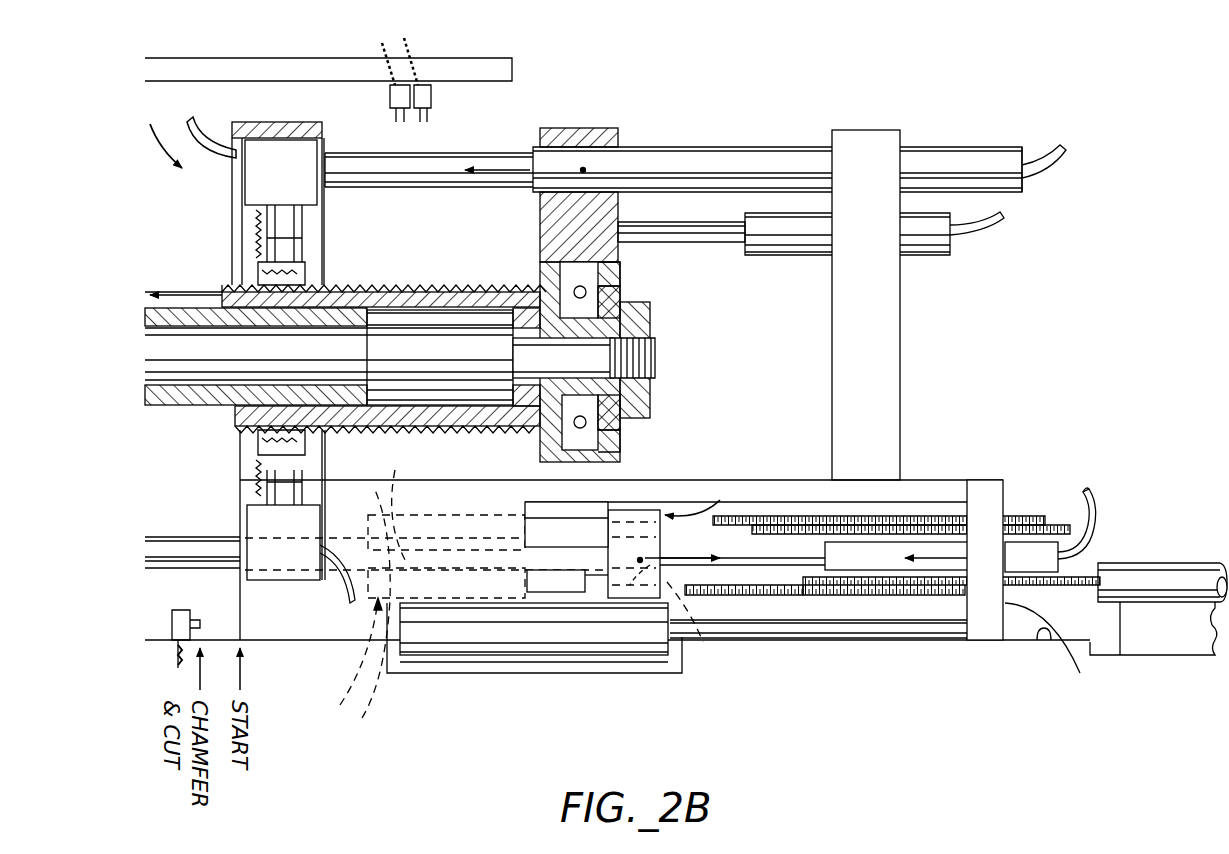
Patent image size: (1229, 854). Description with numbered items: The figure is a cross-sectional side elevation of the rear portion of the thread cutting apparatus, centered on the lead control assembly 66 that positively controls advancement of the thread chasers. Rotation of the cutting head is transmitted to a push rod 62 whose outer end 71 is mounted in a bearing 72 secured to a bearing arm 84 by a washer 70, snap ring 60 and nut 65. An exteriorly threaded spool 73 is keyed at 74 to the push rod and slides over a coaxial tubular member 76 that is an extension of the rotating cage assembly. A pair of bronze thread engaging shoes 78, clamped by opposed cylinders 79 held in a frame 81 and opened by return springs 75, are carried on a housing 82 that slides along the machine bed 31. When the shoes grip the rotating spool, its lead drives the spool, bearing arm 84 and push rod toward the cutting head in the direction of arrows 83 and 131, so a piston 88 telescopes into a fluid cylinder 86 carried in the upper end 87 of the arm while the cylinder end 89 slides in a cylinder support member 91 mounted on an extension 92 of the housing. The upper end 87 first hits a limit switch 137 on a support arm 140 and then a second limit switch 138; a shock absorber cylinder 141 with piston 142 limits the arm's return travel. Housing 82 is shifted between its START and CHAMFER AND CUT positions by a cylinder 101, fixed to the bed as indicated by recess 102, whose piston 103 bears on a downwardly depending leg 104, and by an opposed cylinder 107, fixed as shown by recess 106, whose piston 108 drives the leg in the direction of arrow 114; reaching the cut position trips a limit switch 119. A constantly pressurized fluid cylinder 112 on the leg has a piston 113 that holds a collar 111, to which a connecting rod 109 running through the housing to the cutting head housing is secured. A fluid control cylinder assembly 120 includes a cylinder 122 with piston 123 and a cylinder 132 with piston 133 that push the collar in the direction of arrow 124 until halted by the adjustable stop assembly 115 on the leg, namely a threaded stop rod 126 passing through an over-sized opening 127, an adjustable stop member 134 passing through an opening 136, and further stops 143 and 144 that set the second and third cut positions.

The bed 31 is at (1050, 642).
The snap ring 60 is at (622, 272).
The push rod 62 is at (440, 290).
The nut 65 is at (650, 330).
The lead control assembly 66 is at (190, 128).
The washer 70 is at (620, 305).
The outer end of push rod 71 is at (600, 355).
The bearing 72 is at (548, 240).
The threaded spool member 73 is at (350, 290).
The key 74 is at (530, 300).
The return springs 75 is at (250, 225).
The tubular member 76 is at (165, 405).
The thread engaging shoes 78 is at (315, 235).
The clamping cylinders 79 is at (295, 150).
The frame 81 is at (260, 125).
The housing 82 is at (305, 660).
The arrow 83 is at (198, 285).
The bearing arm 84 is at (548, 212).
The fluid cylinder 86 is at (705, 145).
The upper end of bearing arm 87 is at (560, 130).
The piston 88 is at (495, 135).
The end of cylinder 89 is at (962, 145).
The cylinder support member 91 is at (858, 130).
The extension 92 is at (880, 480).
The cylinder 101 is at (495, 655).
The recess 102 is at (440, 665).
The piston 103 is at (938, 640).
The downwardly depending leg 104 is at (1042, 649).
The recess 106 is at (1160, 655).
The cylinder 107 is at (1128, 563).
The piston 108 is at (1088, 565).
The connecting rod 109 is at (200, 537).
The collar 111 is at (720, 516).
The fluid cylinder 112 is at (935, 550).
The piston 113 is at (800, 610).
The arrow 114 is at (985, 558).
The adjustable stop assembly 115 is at (1035, 480).
The limit switch 119 is at (180, 610).
The fluid control cylinder assembly 120 is at (342, 695).
The cylinder 122 is at (418, 515).
The piston 123 is at (585, 512).
The arrow 124 is at (680, 530).
The threaded stop rod 126 is at (920, 540).
The over-sized opening 127 is at (720, 500).
The arrow 131 is at (570, 160).
The cylinder 132 is at (354, 615).
The piston 133 is at (560, 595).
The adjustable stop member 134 is at (860, 598).
The opening 136 is at (714, 632).
The limit switch 137 is at (432, 100).
The second limit switch 138 is at (385, 85).
The support arm 140 is at (207, 75).
The shock absorber cylinder 141 is at (775, 252).
The piston 142 is at (712, 245).
The stop 143 is at (778, 525).
The stop 144 is at (820, 598).